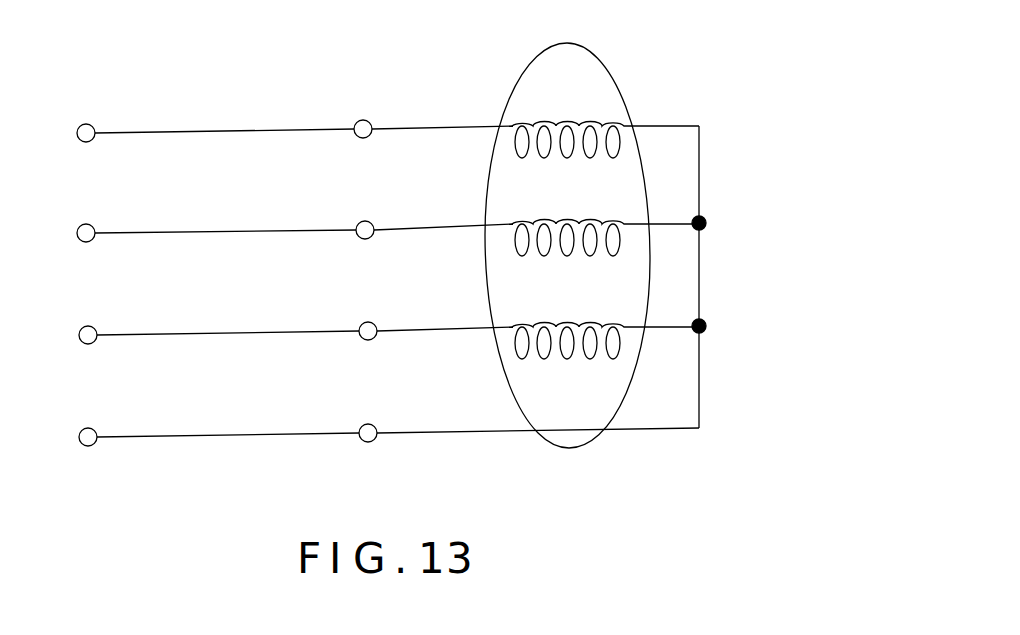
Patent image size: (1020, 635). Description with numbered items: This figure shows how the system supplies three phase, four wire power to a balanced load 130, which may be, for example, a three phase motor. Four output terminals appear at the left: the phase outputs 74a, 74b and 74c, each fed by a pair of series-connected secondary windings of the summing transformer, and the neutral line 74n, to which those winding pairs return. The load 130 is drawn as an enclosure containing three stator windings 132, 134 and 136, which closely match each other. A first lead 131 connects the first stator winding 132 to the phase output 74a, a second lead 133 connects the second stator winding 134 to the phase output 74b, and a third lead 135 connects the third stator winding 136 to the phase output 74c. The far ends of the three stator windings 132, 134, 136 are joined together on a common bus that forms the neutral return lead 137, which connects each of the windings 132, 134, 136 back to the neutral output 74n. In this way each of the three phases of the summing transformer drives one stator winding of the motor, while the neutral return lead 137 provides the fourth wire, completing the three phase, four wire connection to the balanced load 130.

The phase output 74a is at (206, 113).
The phase output 74b is at (207, 215).
The phase output 74c is at (208, 316).
The neutral line 74n is at (208, 418).
The load 130 is at (603, 66).
The lead 131 is at (423, 127).
The first stator winding 132 is at (617, 148).
The lead 133 is at (453, 227).
The second stator winding 134 is at (619, 250).
The lead 135 is at (452, 330).
The third stator winding 136 is at (619, 353).
The neutral return lead 137 is at (700, 408).